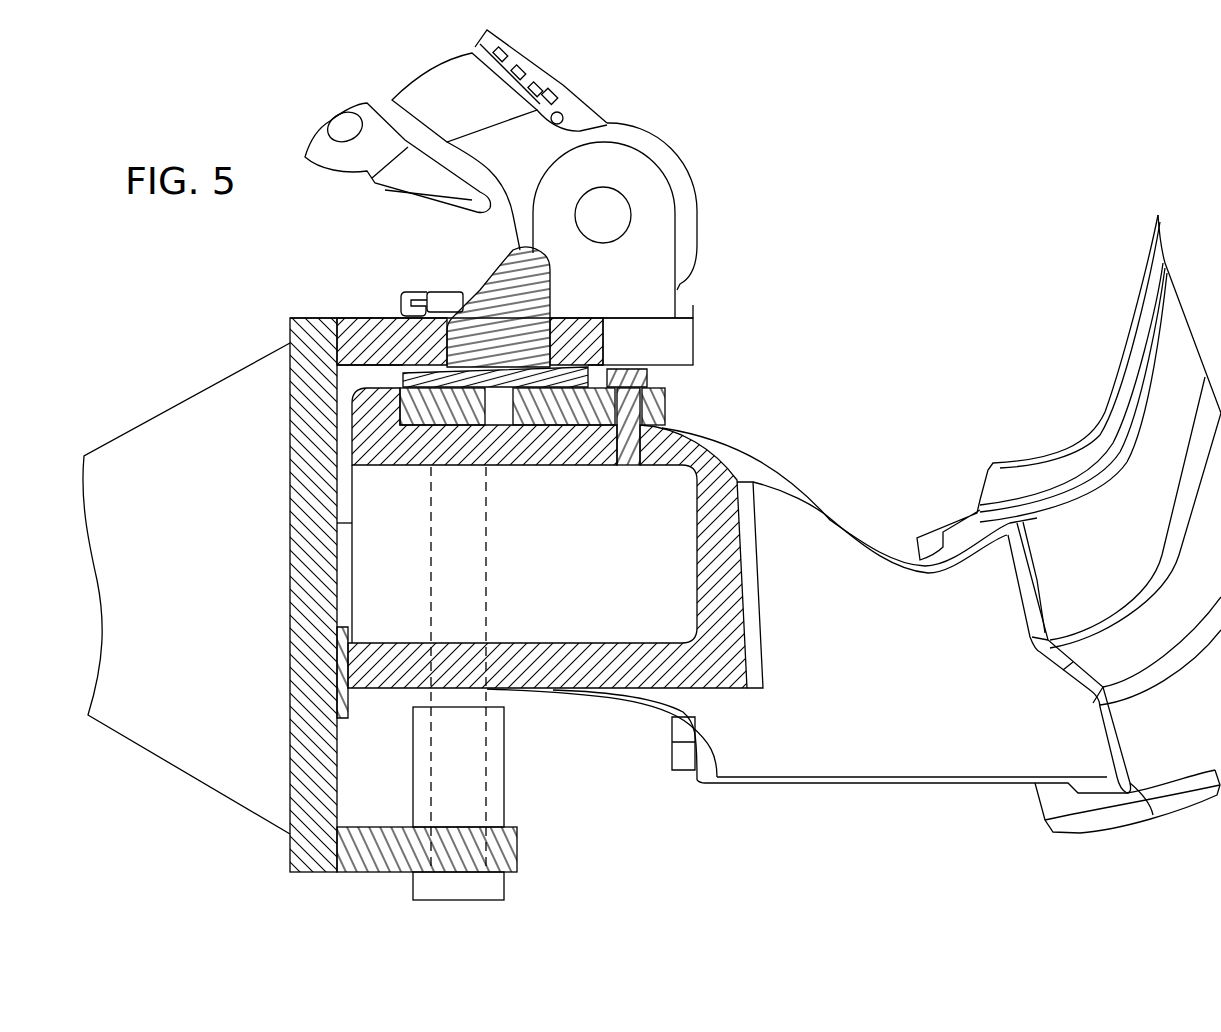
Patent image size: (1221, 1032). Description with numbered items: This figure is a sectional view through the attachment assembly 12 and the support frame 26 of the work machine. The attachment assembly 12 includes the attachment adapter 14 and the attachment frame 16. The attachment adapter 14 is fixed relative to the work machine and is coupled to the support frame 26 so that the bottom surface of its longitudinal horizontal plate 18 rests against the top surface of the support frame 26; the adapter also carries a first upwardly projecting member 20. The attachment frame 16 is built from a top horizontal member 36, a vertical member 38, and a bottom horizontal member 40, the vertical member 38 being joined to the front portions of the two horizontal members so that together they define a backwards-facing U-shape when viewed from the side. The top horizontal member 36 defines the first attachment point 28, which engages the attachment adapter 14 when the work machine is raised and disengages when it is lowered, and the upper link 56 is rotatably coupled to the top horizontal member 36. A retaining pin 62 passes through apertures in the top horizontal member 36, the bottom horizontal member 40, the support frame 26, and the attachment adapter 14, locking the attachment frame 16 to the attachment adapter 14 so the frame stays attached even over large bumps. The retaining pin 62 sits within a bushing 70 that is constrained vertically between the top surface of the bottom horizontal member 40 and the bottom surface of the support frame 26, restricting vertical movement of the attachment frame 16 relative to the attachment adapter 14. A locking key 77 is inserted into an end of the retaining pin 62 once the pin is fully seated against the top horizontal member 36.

The attachment assembly 12 is at (763, 203).
The attachment adapter 14 is at (687, 417).
The attachment frame 16 is at (379, 893).
The longitudinal horizontal plate 18 is at (700, 392).
The first upwardly projecting member 20 is at (487, 272).
The support frame 26 is at (908, 820).
The first attachment point 28 is at (443, 340).
The top horizontal member 36 is at (703, 327).
The vertical member 38 is at (290, 845).
The bottom horizontal member 40 is at (517, 858).
The upper link 56 is at (488, 36).
The retaining pin 62 is at (473, 900).
The bushing 70 is at (505, 735).
The locking key 77 is at (413, 289).